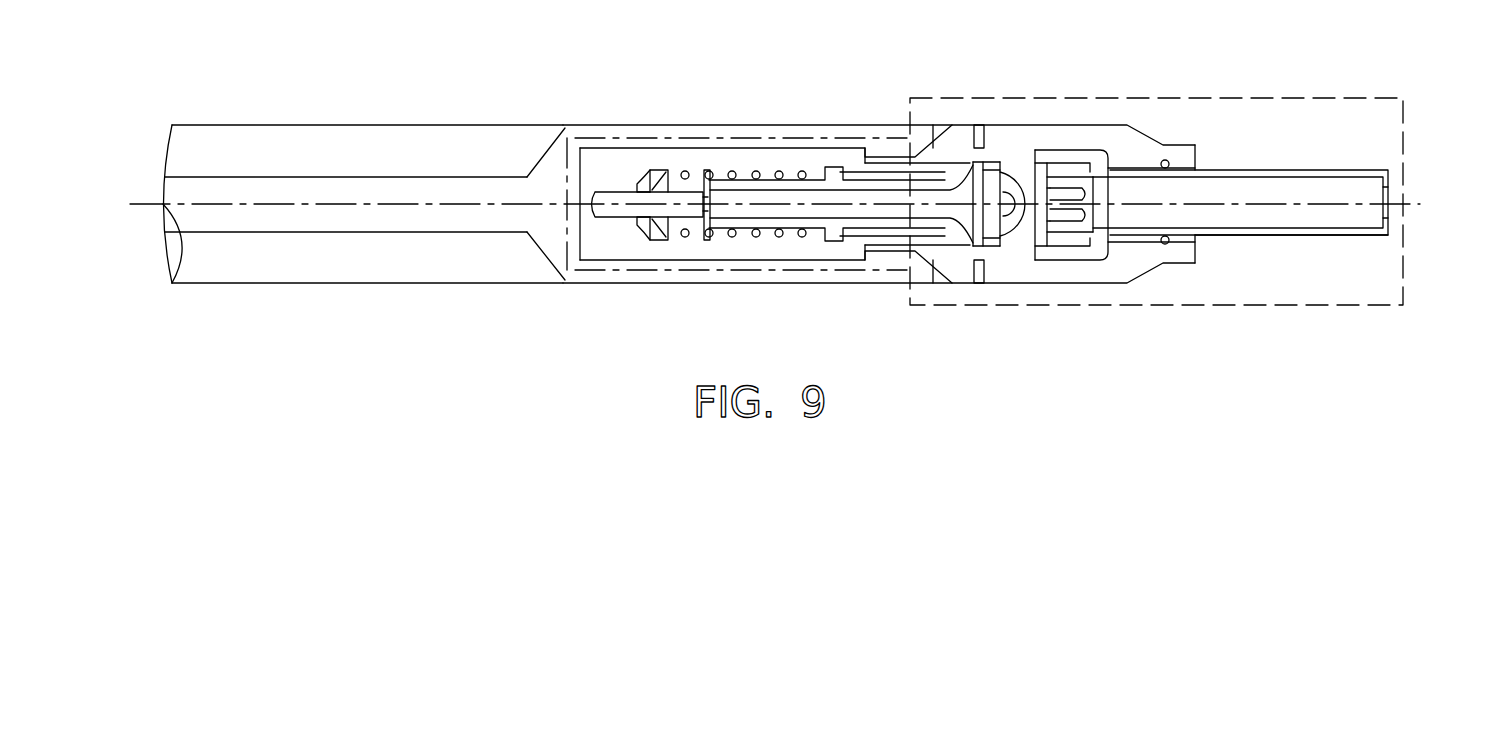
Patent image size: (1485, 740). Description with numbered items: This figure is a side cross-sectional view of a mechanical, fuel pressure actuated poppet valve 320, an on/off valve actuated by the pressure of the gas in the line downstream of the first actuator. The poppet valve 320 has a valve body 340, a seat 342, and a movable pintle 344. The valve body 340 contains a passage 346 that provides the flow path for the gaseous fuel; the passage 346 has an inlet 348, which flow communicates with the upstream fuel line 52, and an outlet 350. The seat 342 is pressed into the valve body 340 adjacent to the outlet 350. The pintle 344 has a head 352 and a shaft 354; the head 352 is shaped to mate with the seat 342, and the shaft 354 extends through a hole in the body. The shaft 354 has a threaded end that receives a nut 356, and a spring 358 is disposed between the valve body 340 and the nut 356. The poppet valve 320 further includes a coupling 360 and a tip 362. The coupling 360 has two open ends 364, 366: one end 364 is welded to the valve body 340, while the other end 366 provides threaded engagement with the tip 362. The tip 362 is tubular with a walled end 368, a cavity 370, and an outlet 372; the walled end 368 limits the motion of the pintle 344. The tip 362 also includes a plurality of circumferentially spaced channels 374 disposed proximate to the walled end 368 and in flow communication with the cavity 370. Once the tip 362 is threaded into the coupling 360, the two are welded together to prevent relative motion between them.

The upstream fuel line 52 is at (305, 284).
The poppet valve 320 is at (1088, 88).
The valve body 340 is at (960, 118).
The seat 342 is at (988, 128).
The pintle 344 is at (1034, 256).
The passage 346 is at (868, 250).
The inlet 348 is at (847, 247).
The outlet 350 is at (962, 240).
The head 352 is at (1016, 163).
The shaft 354 is at (612, 224).
The nut 356 is at (655, 172).
The spring 358 is at (710, 172).
The coupling 360 is at (1120, 265).
The tip 362 is at (1299, 240).
The coupling end 364 is at (973, 248).
The coupling end 366 is at (1190, 158).
The walled end 368 is at (1097, 250).
The cavity 370 is at (1248, 192).
The outlet 372 is at (1390, 197).
The channels 374 is at (1093, 200).